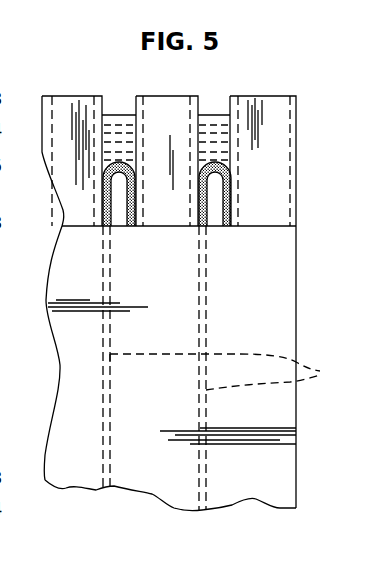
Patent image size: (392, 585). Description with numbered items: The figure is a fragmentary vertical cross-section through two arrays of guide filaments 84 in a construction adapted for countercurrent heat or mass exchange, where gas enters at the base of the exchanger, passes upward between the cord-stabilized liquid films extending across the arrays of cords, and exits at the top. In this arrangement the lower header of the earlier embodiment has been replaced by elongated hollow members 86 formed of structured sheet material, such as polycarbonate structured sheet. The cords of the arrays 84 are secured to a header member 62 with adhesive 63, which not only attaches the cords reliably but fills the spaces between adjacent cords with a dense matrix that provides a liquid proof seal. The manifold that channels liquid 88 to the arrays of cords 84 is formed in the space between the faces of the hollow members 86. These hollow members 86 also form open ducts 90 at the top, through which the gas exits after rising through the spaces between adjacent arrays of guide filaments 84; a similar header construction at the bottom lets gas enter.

The header member 62 is at (122, 214).
The adhesive 63 is at (132, 200).
The arrays of guide filaments 84 is at (228, 372).
The elongated hollow member 86 is at (296, 126).
The liquid 88 is at (216, 112).
The open ducts 90 is at (63, 113).